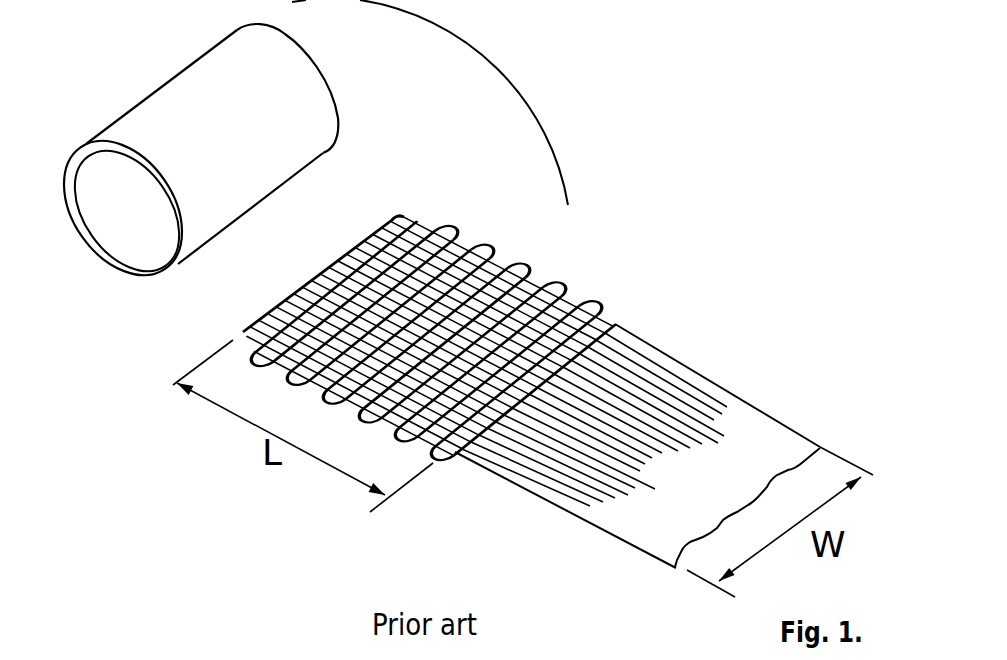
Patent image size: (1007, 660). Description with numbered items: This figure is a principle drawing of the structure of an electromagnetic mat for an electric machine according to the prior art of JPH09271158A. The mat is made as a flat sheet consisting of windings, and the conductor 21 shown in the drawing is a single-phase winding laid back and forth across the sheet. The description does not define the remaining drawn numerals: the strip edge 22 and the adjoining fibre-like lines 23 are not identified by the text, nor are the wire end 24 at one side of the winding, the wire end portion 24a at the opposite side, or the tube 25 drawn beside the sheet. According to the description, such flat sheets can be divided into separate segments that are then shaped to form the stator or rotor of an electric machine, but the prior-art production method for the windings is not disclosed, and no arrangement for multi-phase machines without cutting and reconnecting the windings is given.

The conductor 21 is at (432, 217).
The base strip 22 is at (644, 342).
The fibres 23 is at (693, 387).
The serpentine wire 24 is at (600, 291).
The wire end portion 24a is at (298, 290).
The tube 25 is at (88, 228).